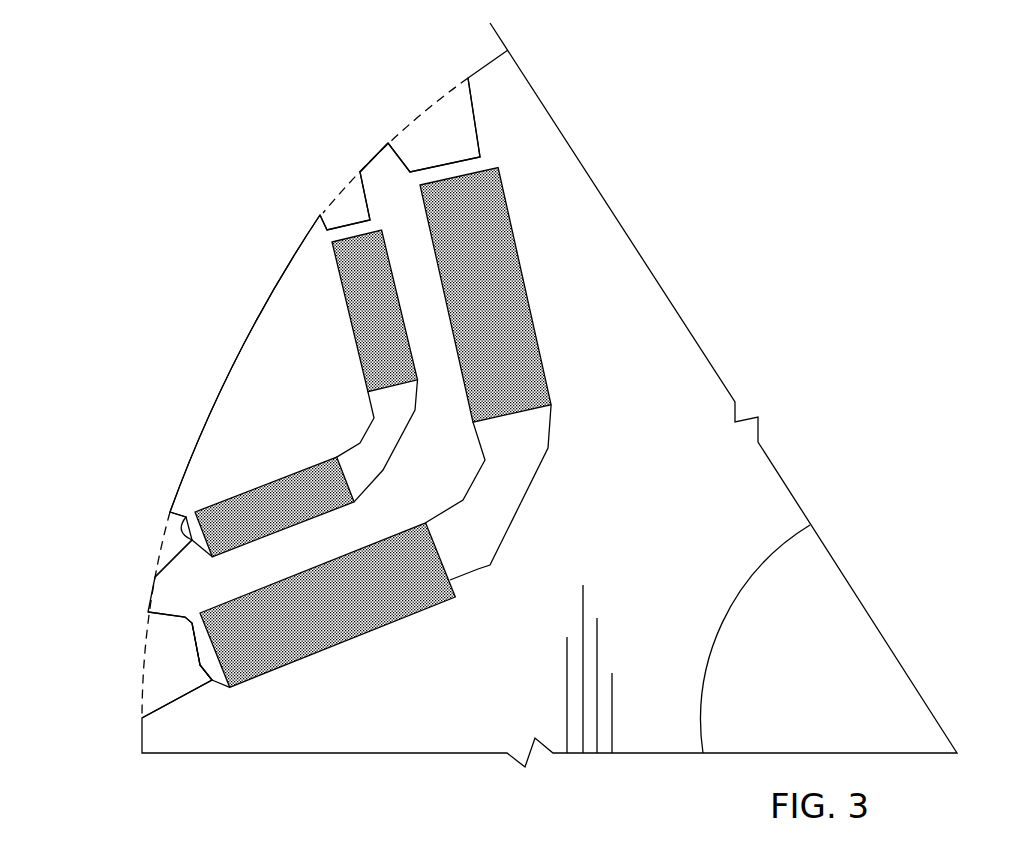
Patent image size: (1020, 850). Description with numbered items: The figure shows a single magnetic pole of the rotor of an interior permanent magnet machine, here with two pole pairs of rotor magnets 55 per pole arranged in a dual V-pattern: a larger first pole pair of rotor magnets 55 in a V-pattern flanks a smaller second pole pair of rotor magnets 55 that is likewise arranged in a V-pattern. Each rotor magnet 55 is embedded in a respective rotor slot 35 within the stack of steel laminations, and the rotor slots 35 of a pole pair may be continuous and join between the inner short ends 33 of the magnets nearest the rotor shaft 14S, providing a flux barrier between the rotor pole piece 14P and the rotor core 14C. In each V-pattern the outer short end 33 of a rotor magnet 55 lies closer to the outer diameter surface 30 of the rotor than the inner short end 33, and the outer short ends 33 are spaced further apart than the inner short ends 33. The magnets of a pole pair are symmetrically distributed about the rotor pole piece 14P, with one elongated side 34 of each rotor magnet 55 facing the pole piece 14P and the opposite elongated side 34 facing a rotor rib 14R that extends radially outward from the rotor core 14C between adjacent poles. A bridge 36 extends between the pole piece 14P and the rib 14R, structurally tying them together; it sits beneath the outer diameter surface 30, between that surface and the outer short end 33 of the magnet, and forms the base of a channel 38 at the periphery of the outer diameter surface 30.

The rotor rib 14R is at (579, 250).
The rotor pole piece 14P is at (303, 398).
The rotor core 14C is at (623, 573).
The rotor shaft 14S is at (828, 675).
The outer diameter surface 30 is at (487, 62).
The channel 38 is at (420, 138).
The short end 33 is at (372, 228).
The elongated side 34 is at (352, 330).
The rotor slot 35 is at (332, 292).
The bridge 36 is at (327, 236).
The rotor magnet 55 is at (384, 329).